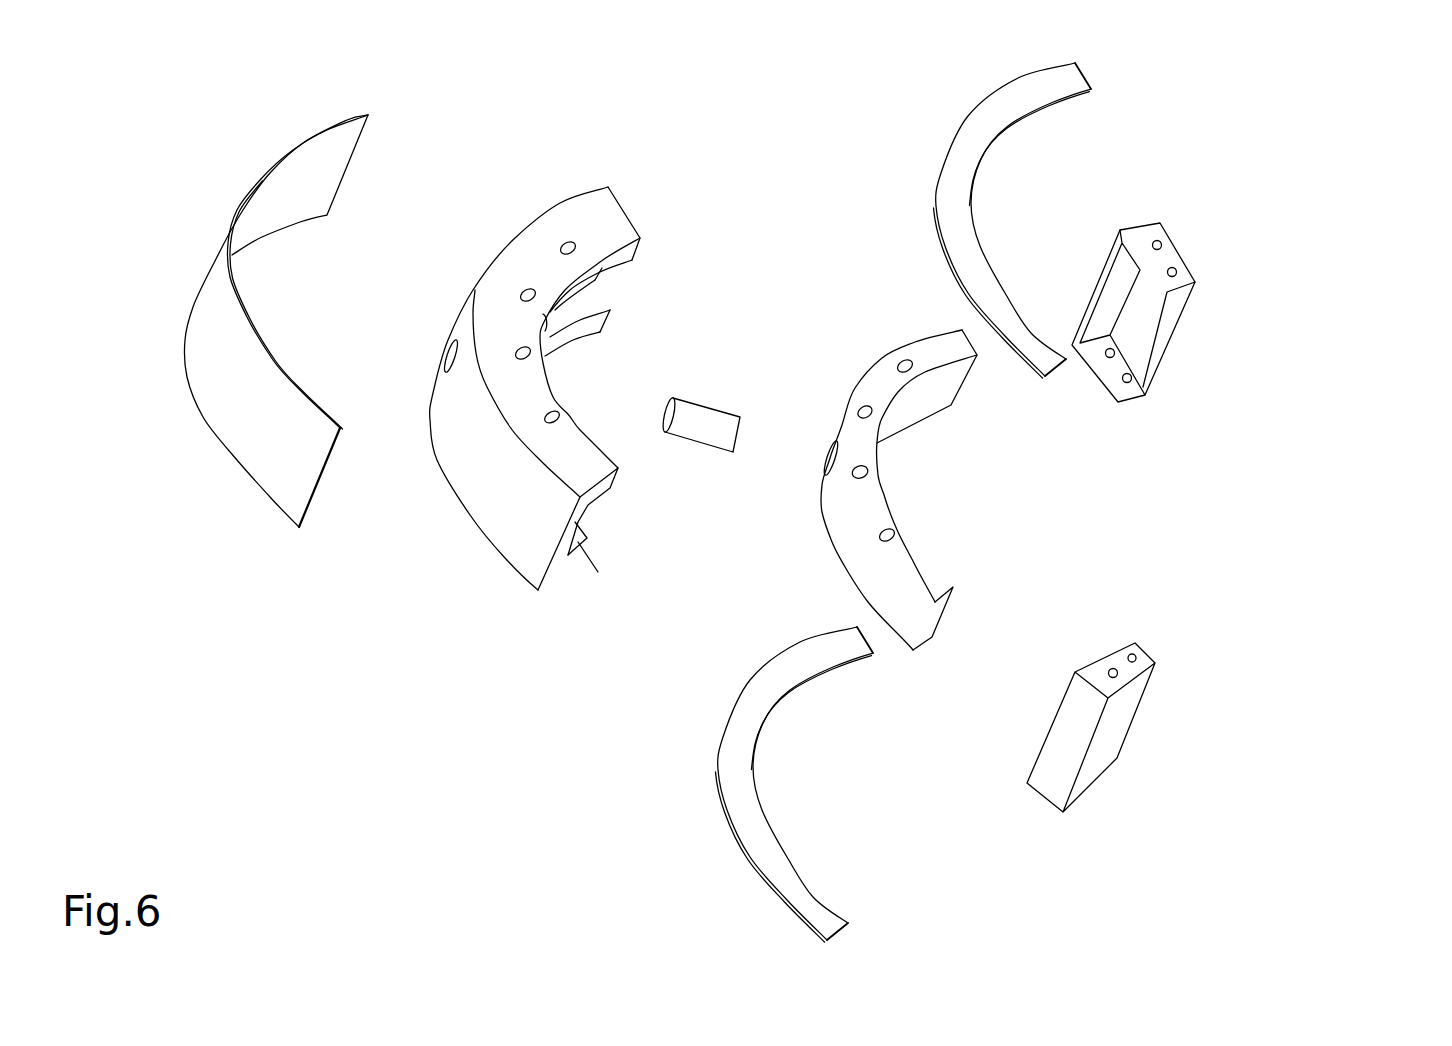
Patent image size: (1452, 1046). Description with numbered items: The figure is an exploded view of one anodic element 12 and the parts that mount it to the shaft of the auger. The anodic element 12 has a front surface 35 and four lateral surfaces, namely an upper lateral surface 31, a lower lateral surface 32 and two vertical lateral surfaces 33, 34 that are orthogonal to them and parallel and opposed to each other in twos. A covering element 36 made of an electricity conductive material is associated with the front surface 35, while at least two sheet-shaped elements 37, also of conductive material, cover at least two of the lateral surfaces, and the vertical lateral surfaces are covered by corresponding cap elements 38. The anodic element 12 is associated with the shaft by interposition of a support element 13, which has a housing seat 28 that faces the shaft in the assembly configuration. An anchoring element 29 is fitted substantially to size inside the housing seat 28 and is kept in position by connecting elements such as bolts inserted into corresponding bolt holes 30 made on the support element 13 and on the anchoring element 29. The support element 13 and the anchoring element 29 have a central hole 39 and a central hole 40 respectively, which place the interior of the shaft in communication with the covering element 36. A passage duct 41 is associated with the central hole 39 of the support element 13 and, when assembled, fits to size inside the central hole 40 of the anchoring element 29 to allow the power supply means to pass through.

The anodic element 12 is at (1342, 119).
The support element 13 is at (476, 289).
The housing seat 28 is at (582, 283).
The anchoring element 29 is at (916, 394).
The bolt holes 30 is at (568, 242).
The upper lateral surface 31 is at (525, 398).
The lower lateral surface 32 is at (548, 591).
The vertical lateral surface 33 is at (579, 543).
The vertical lateral surface 34 is at (593, 277).
The front surface 35 is at (468, 437).
The covering element 36 is at (220, 377).
The sheet-shaped elements 37 is at (738, 781).
The cap elements 38 is at (1153, 312).
The central hole 39 is at (450, 360).
The central hole 40 is at (830, 455).
The passage duct 41 is at (693, 421).